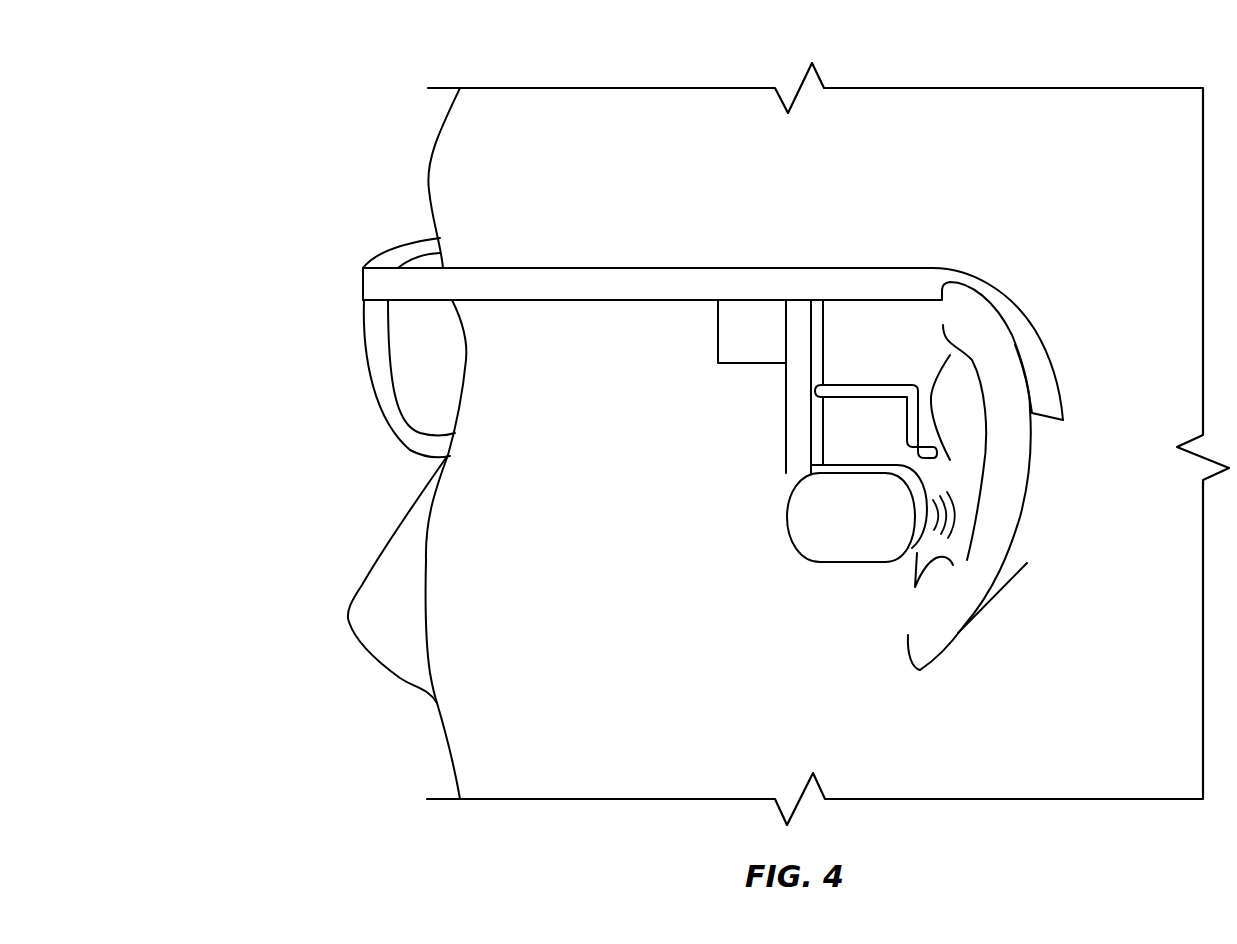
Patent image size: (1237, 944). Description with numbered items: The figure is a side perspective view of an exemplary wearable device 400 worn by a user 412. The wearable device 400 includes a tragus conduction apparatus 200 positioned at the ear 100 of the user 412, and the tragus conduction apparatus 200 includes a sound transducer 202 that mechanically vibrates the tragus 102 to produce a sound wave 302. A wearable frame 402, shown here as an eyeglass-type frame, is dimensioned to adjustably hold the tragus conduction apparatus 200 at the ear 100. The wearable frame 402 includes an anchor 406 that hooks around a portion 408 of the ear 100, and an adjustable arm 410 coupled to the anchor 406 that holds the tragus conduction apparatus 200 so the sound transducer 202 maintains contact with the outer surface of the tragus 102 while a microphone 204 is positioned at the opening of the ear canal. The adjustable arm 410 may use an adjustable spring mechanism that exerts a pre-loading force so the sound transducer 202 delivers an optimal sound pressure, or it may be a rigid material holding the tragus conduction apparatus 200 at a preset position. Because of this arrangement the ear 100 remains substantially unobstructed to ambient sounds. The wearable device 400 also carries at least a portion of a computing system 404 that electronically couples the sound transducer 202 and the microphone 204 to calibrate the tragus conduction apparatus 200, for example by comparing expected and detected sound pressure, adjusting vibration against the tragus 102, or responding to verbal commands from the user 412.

The wearable device 400 is at (232, 124).
The wearable frame 402 is at (365, 323).
The computing system 404 is at (718, 340).
The anchor 406 is at (1014, 293).
The portion of ear 408 is at (1018, 365).
The adjustable arm 410 is at (785, 418).
The user 412 is at (357, 583).
The tragus conduction apparatus 200 is at (785, 482).
The sound transducer 202 is at (800, 548).
The microphone 204 is at (943, 453).
The sound wave 302 is at (955, 513).
The ear 100 is at (945, 650).
The tragus 102 is at (913, 556).